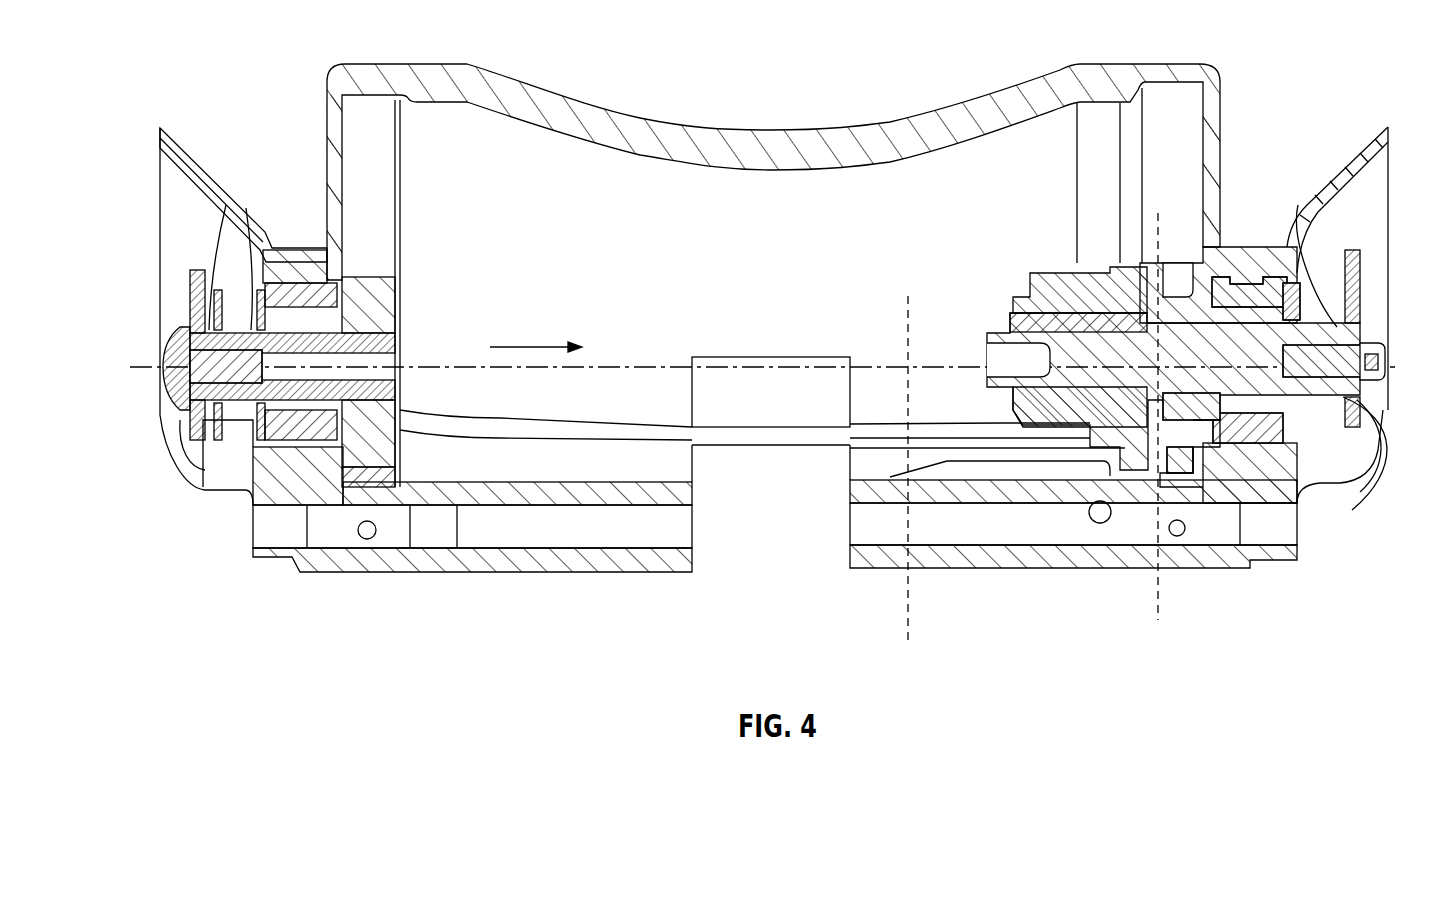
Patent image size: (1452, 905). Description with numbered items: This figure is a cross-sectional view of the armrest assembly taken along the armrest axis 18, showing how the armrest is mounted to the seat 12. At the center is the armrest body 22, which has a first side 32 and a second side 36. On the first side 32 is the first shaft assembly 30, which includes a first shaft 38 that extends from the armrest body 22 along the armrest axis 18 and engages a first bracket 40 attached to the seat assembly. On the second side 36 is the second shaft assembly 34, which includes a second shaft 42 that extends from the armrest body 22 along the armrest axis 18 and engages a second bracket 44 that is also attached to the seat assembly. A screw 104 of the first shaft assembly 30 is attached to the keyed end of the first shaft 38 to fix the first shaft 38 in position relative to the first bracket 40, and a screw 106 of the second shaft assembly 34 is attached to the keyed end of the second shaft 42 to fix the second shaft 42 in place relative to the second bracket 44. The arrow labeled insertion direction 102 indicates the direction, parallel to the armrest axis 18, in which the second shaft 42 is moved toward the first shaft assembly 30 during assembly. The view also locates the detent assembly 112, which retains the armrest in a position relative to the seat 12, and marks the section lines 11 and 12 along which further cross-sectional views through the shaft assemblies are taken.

The section line 11- 11 is at (908, 296).
The seat 12 is at (1158, 213).
The armrest axis 18 is at (624, 362).
The armrest body 22 is at (795, 133).
The first shaft assembly 30 is at (1322, 524).
The first side 32 is at (1220, 130).
The second shaft assembly 34 is at (222, 556).
The second side 36 is at (335, 108).
The first shaft 38 is at (1296, 258).
The first bracket 40 is at (1362, 458).
The second shaft 42 is at (335, 300).
The second bracket 44 is at (193, 443).
The insertion direction 102 is at (530, 342).
The screw 104 is at (1365, 395).
The screw 106 is at (172, 400).
The detent assembly 112 is at (1195, 497).